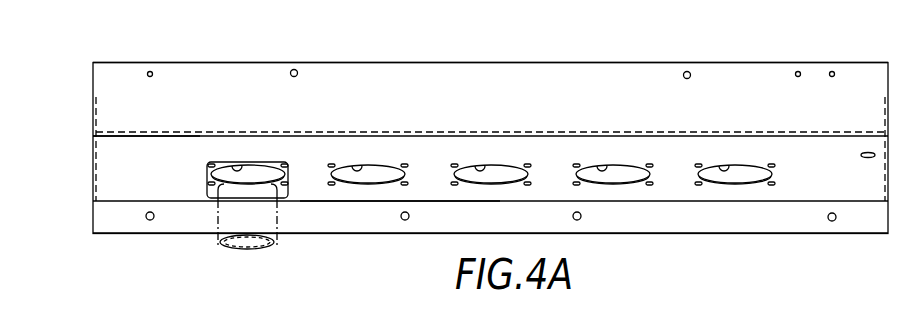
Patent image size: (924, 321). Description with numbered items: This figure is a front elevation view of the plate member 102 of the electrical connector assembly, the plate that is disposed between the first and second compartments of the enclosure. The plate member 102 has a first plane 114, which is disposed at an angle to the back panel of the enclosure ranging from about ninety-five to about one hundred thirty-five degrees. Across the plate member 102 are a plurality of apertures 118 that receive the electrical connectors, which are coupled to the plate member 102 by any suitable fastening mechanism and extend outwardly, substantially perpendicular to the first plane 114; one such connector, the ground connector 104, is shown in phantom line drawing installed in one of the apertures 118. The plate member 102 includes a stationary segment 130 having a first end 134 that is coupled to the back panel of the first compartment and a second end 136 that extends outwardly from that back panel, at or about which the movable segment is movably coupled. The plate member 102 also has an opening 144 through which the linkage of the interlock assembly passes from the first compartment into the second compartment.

The second end 136 is at (84, 80).
The first plane 114 is at (164, 166).
The apertures 118 is at (238, 166).
The opening 144 is at (861, 157).
The stationary segment 130 is at (432, 193).
The first end 134 is at (84, 215).
The plate member 102 is at (192, 195).
The ground connector 104 is at (226, 251).